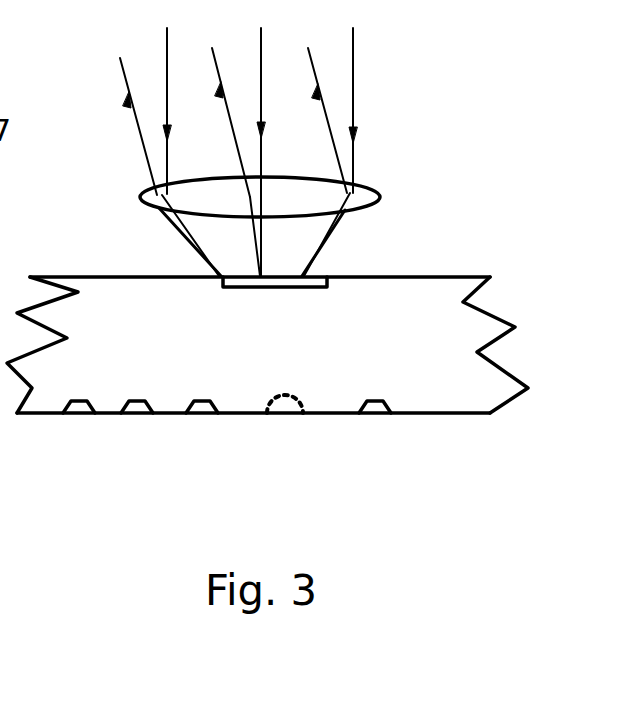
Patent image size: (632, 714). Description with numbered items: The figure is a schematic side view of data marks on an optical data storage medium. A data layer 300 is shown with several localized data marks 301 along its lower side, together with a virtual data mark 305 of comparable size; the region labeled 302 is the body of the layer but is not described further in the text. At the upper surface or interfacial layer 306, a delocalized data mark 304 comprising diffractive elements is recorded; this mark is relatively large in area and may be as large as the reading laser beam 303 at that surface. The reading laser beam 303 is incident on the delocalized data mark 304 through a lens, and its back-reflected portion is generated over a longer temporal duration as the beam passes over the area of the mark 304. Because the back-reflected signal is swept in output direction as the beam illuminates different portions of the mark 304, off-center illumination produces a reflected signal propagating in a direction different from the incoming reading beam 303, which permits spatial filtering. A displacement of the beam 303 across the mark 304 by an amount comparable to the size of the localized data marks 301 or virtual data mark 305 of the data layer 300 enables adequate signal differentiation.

The data layer 300 is at (528, 415).
The localized data mark 301 is at (197, 410).
The bulk material of substrate 302 is at (143, 354).
The reading laser beam 303 is at (353, 92).
The delocalized data mark 304 is at (283, 284).
The virtual data mark 305 is at (288, 413).
The surface or interfacial layer 306 is at (526, 277).